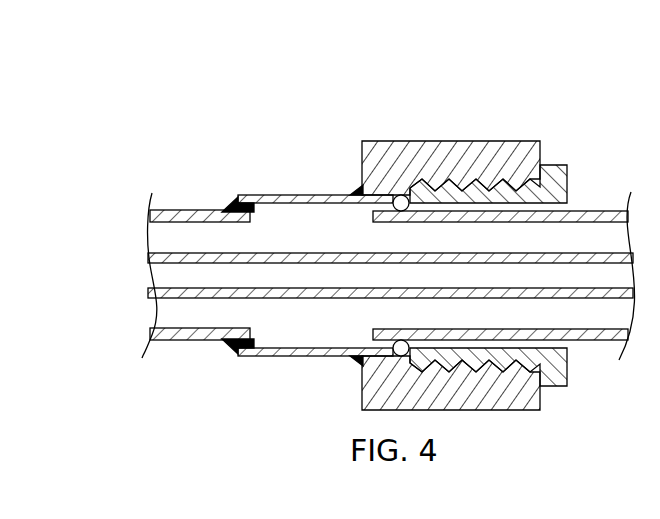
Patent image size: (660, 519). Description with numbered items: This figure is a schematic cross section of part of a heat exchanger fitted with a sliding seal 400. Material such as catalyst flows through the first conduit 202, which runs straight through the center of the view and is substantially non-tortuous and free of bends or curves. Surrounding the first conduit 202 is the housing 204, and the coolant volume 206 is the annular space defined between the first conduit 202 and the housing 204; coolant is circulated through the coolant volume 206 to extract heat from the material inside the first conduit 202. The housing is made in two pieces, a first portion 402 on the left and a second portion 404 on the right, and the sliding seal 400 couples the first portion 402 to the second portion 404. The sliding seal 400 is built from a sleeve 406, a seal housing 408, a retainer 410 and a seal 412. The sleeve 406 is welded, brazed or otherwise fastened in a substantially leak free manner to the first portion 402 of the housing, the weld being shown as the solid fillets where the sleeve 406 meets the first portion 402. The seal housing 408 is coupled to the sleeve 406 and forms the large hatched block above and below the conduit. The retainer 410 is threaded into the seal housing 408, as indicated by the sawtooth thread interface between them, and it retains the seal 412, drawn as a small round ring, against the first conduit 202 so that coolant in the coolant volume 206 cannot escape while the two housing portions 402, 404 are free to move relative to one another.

The sliding seal 400 is at (473, 224).
The first portion of the housing 402 is at (173, 210).
The second portion of the housing 404 is at (582, 210).
The sleeve 406 is at (291, 182).
The seal housing 408 is at (381, 141).
The retainer 410 is at (553, 164).
The seal 412 is at (403, 196).
The first conduit 202 is at (268, 254).
The housing 204 is at (207, 184).
The coolant volume 206 is at (326, 338).